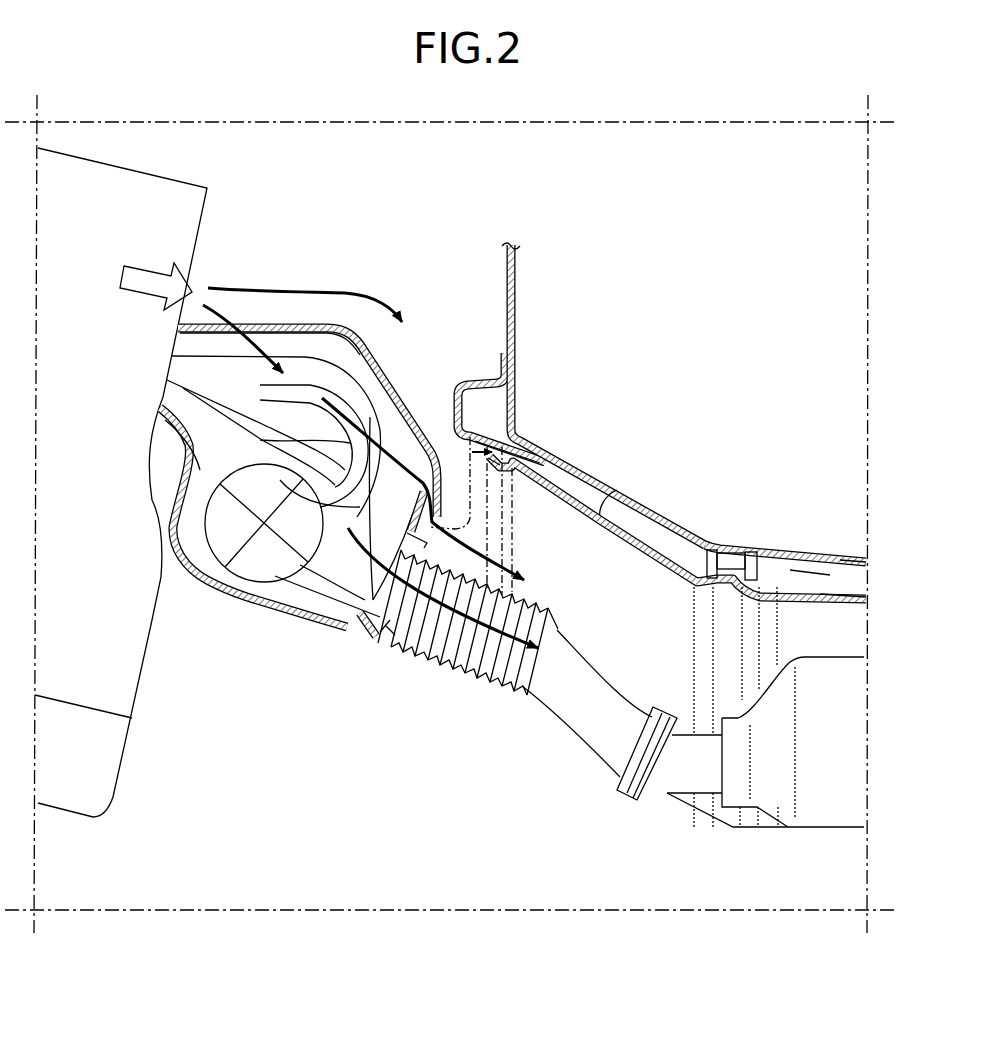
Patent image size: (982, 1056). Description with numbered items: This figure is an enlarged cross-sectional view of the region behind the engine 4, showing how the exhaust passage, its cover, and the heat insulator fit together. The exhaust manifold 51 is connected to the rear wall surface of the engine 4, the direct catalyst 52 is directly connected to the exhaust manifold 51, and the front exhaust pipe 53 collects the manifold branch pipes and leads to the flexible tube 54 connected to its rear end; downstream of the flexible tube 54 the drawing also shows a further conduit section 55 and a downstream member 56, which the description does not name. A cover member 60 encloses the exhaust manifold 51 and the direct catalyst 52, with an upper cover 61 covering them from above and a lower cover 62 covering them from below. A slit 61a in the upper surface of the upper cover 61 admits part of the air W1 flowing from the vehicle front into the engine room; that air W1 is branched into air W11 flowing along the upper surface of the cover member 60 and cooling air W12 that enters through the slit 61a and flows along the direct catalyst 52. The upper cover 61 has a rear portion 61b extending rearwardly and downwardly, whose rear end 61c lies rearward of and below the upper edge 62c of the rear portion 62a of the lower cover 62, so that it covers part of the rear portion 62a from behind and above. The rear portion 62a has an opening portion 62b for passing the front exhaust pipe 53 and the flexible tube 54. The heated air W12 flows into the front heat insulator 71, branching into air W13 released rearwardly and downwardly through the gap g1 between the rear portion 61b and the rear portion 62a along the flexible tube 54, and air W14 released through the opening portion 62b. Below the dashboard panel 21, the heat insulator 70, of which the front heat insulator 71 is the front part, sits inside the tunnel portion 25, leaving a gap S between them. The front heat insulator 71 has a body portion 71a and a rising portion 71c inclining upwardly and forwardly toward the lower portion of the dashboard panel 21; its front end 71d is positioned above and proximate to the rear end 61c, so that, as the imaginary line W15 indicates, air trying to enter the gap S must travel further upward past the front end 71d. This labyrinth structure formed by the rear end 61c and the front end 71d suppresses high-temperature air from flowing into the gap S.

The engine 4 is at (178, 200).
The dashboard panel 21 is at (515, 285).
The tunnel portion 25 is at (673, 526).
The exhaust manifold 51 is at (223, 388).
The direct catalyst 52 is at (255, 572).
The front exhaust pipe 53 is at (315, 588).
The flexible tube 54 is at (487, 677).
The hose 55 is at (577, 755).
The housing 56 is at (825, 817).
The cover member 60 is at (327, 311).
The upper cover 61 is at (357, 327).
The slit 61a is at (253, 311).
The rear portion of the upper cover 61b is at (454, 426).
The rear end of the upper cover 61c is at (470, 433).
The lower cover 62 is at (197, 573).
The rear portion of the lower cover 62a is at (368, 612).
The opening portion 62b is at (392, 637).
The upper edge of the rear portion of the lower cover 62c is at (417, 450).
The gap g1 is at (418, 613).
The heat insulator 70 is at (849, 586).
The front heat insulator 71 is at (845, 620).
The body portion 71a is at (833, 590).
The rising portion 71c is at (618, 490).
The front end of the rising portion 71d is at (500, 457).
The gap S is at (820, 573).
The air W1 is at (156, 274).
The air W11 is at (333, 310).
The cooling air W12 is at (253, 339).
The air W13 is at (453, 493).
The air W14 is at (473, 598).
The imaginary line W15 is at (479, 516).